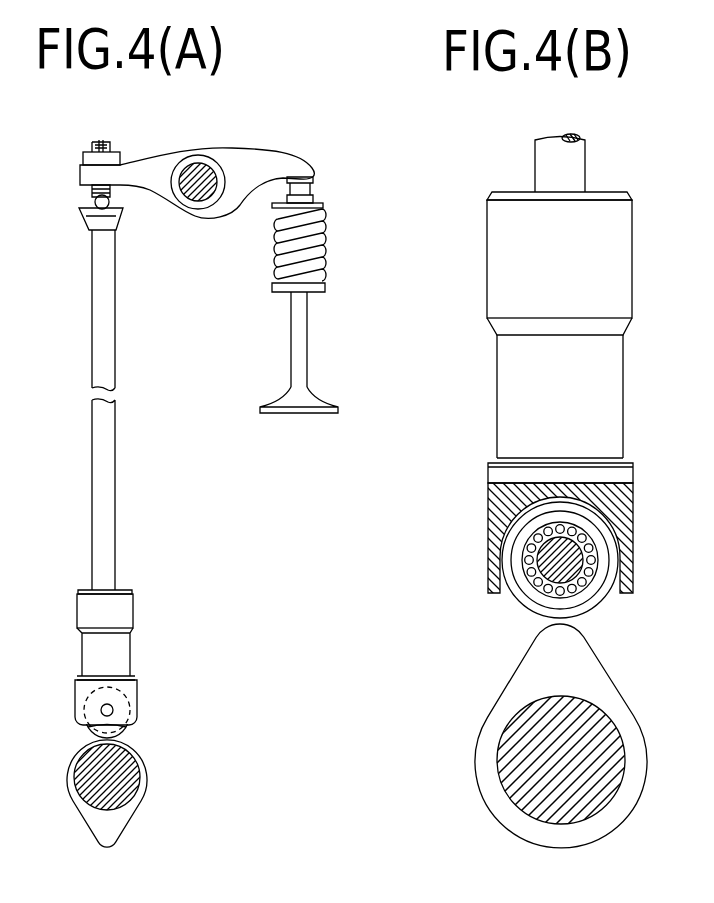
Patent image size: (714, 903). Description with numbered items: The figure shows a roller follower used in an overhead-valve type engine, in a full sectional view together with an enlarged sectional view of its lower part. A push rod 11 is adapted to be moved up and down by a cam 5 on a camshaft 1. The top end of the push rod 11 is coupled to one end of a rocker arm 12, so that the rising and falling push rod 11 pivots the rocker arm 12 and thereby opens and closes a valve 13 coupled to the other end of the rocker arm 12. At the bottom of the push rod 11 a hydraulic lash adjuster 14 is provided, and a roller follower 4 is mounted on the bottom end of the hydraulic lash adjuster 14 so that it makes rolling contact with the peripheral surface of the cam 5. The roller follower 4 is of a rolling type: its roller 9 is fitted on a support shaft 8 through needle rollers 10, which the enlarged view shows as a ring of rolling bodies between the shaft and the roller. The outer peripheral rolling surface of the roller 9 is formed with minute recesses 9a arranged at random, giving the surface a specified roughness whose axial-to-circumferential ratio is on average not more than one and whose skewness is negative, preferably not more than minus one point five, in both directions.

In FIG. 4A, the camshaft 1 is at (124, 785).
In FIG. 4B, the camshaft 1 is at (593, 782).
In FIG. 4A, the roller follower 4 is at (71, 732).
In FIG. 4B, the roller follower 4 is at (603, 621).
In FIG. 4A, the cam 5 is at (100, 833).
In FIG. 4B, the cam 5 is at (570, 655).
In FIG. 4A, the support shaft 8 is at (106, 712).
In FIG. 4B, the support shaft 8 is at (570, 562).
In FIG. 4A, the roller 9 is at (84, 739).
In FIG. 4B, the roller 9 is at (505, 542).
In FIG. 4A, the minute recesses 9a is at (122, 736).
In FIG. 4B, the minute recesses 9a is at (530, 620).
In FIG. 4B, the needle rollers 10 is at (530, 600).
In FIG. 4A, the push rod 11 is at (100, 442).
In FIG. 4B, the push rod 11 is at (545, 157).
In FIG. 4A, the rocker arm 12 is at (155, 163).
In FIG. 4A, the valve 13 is at (333, 407).
In FIG. 4A, the hydraulic lash adjuster 14 is at (92, 650).
In FIG. 4B, the hydraulic lash adjuster 14 is at (508, 380).